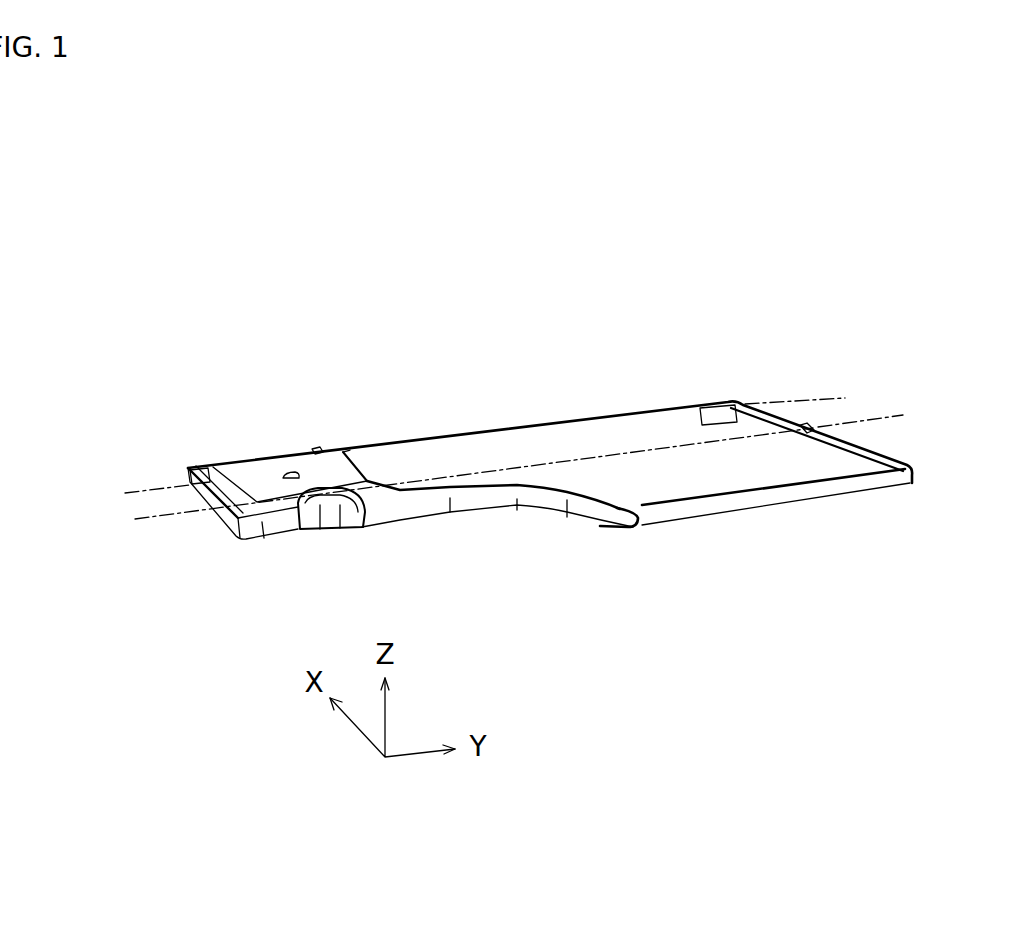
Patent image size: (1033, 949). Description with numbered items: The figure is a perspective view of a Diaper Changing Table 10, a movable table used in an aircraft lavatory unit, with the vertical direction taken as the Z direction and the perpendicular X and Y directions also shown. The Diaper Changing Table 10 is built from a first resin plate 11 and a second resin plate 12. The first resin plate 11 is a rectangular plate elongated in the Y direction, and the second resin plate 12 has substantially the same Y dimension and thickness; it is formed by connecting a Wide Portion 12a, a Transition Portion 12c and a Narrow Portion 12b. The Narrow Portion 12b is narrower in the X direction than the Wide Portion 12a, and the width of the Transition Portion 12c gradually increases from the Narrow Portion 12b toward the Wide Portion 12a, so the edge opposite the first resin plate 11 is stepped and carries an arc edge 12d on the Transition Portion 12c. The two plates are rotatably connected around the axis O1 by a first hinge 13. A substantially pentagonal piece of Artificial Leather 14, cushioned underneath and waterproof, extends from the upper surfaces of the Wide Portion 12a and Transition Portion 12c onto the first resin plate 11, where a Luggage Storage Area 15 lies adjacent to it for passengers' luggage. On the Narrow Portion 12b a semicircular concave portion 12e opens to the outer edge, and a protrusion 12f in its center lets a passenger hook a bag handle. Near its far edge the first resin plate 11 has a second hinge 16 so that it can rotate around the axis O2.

The Diaper Changing Table 10 is at (735, 397).
The first resin plate 11 is at (344, 450).
The second resin plate 12 is at (910, 484).
The Wide Portion 12a is at (758, 500).
The Narrow Portion 12b is at (282, 532).
The Transition Portion 12c is at (600, 517).
The arc edge 12d is at (517, 507).
The semicircular concave portion 12e is at (314, 535).
The protrusion 12f is at (338, 520).
The first hinge 13 is at (317, 448).
The Artificial Leather 14 is at (538, 447).
The Luggage Storage Area 15 is at (248, 464).
The second hinge 16 is at (197, 467).
The axis O1 is at (498, 478).
The axis O2 is at (455, 454).